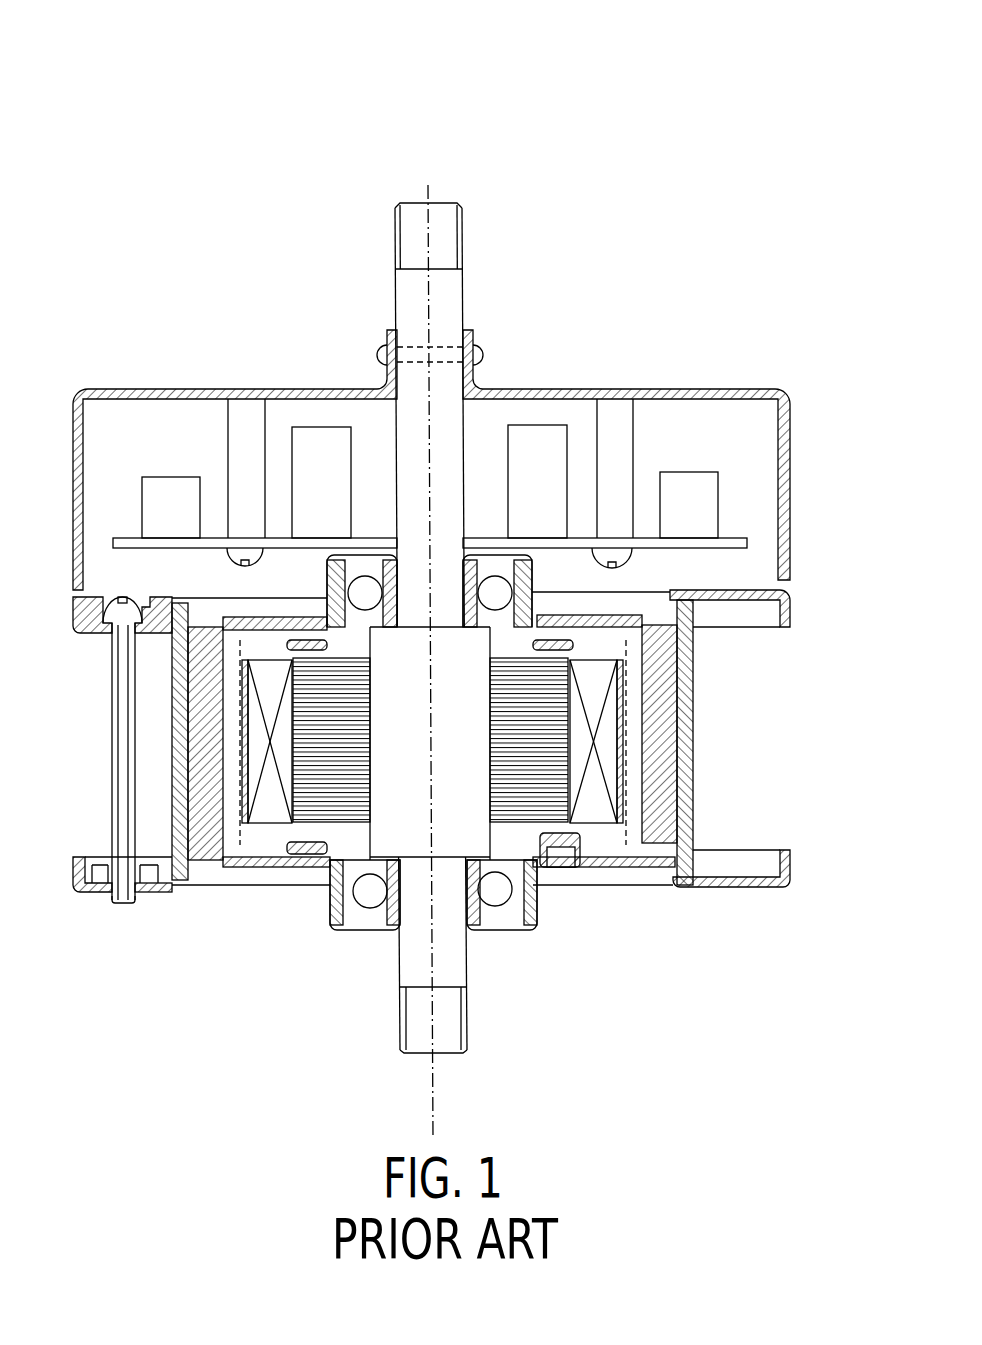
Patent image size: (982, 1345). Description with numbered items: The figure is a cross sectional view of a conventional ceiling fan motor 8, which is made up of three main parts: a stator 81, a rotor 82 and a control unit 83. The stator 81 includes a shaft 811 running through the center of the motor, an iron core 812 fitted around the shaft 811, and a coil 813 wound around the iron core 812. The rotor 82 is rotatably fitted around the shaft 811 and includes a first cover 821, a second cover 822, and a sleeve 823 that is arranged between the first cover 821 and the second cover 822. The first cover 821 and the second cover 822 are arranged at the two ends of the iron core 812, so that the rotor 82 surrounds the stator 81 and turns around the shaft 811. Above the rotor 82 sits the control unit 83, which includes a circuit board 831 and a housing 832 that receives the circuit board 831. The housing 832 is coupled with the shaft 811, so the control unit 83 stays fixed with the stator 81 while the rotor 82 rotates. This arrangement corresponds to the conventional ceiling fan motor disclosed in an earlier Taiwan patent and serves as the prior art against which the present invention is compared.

The ceiling fan motor 8 is at (200, 97).
The stator 81 is at (370, 170).
The shaft 811 is at (458, 222).
The iron core 812 is at (537, 812).
The coil 813 is at (598, 815).
The rotor 82 is at (158, 925).
The first cover 821 is at (790, 598).
The second cover 822 is at (753, 882).
The sleeve 823 is at (692, 748).
The control unit 83 is at (752, 360).
The circuit board 831 is at (647, 540).
The housing 832 is at (587, 389).